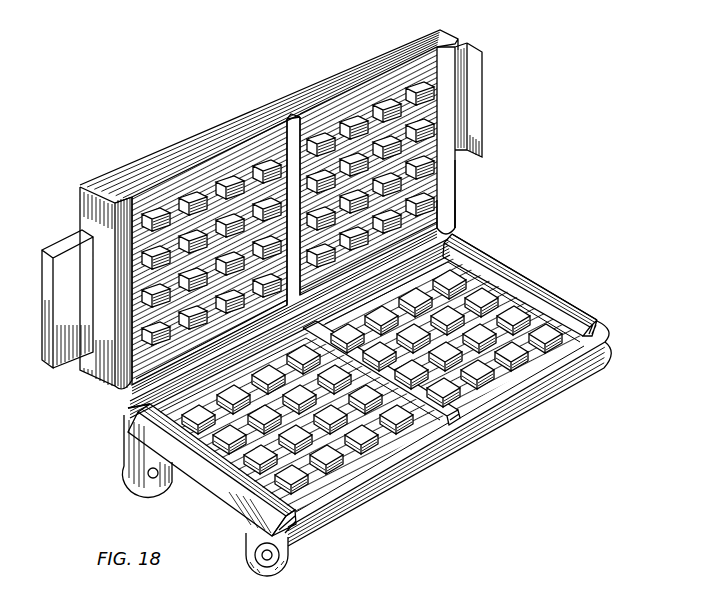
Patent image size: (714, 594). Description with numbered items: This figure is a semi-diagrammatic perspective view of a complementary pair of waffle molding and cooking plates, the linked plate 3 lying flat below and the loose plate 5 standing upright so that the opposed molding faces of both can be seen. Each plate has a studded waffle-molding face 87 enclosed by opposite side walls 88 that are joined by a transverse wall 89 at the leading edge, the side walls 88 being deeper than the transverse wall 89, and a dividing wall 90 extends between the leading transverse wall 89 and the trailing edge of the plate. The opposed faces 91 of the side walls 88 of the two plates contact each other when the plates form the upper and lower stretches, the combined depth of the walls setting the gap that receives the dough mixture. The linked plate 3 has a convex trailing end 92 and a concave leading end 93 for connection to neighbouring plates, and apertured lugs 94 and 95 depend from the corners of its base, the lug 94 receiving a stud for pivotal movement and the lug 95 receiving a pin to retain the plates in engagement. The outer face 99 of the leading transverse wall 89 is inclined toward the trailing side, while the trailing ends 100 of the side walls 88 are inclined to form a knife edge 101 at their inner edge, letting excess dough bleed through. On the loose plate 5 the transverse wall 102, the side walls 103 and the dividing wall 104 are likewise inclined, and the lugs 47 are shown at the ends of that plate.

The linked plate 3 is at (548, 396).
The loose plate 5 is at (247, 123).
The pivot lug 47 is at (56, 362).
The studded waffle-molding face 87 is at (430, 138).
The side wall 88 is at (456, 148).
The transverse wall 89 is at (440, 240).
The dividing wall 90 is at (441, 424).
The opposed face of side wall 91 is at (448, 205).
The convex trailing end 92 is at (475, 440).
The concave leading end 93 is at (133, 460).
The apertured lug 94 is at (250, 566).
The apertured lug 95 is at (147, 475).
The outer face of leading transverse wall 99 is at (150, 405).
The trailing end of side wall 100 is at (255, 546).
The knife edge 101 is at (275, 528).
The transverse wall of loose plate 102 is at (453, 220).
The side wall of loose plate 103 is at (128, 360).
The dividing wall of loose plate 104 is at (290, 127).